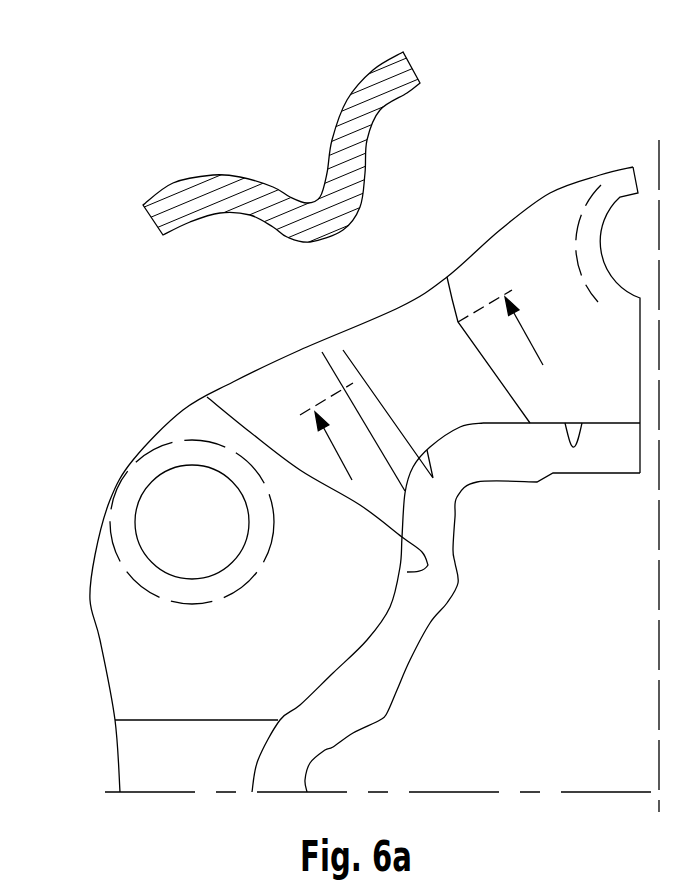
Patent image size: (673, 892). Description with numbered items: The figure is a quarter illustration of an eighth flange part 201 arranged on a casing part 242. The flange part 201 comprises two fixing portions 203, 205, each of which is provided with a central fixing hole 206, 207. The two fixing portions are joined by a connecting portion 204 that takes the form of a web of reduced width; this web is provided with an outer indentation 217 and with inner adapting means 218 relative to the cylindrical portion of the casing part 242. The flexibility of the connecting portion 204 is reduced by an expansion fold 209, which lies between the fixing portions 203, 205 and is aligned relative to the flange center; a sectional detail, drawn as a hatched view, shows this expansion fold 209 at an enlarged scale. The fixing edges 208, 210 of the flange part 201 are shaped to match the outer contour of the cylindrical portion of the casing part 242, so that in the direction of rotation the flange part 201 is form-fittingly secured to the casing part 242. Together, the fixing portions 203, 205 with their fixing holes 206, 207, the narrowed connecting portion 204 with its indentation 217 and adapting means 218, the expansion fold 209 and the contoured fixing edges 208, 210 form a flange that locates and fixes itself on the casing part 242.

The flange part 201 is at (193, 312).
The fixing portion 203 is at (198, 425).
The connecting portion 204 is at (367, 338).
The fixing portion 205 is at (572, 205).
The fixing hole 206 is at (172, 492).
The fixing hole 207 is at (623, 227).
The fixing edge 208 is at (207, 397).
The expansion fold 209 is at (340, 165).
The fixing edge 210 is at (565, 423).
The outer indentation 217 is at (385, 318).
The inner adapting means 218 is at (330, 347).
The casing part 242 is at (472, 407).